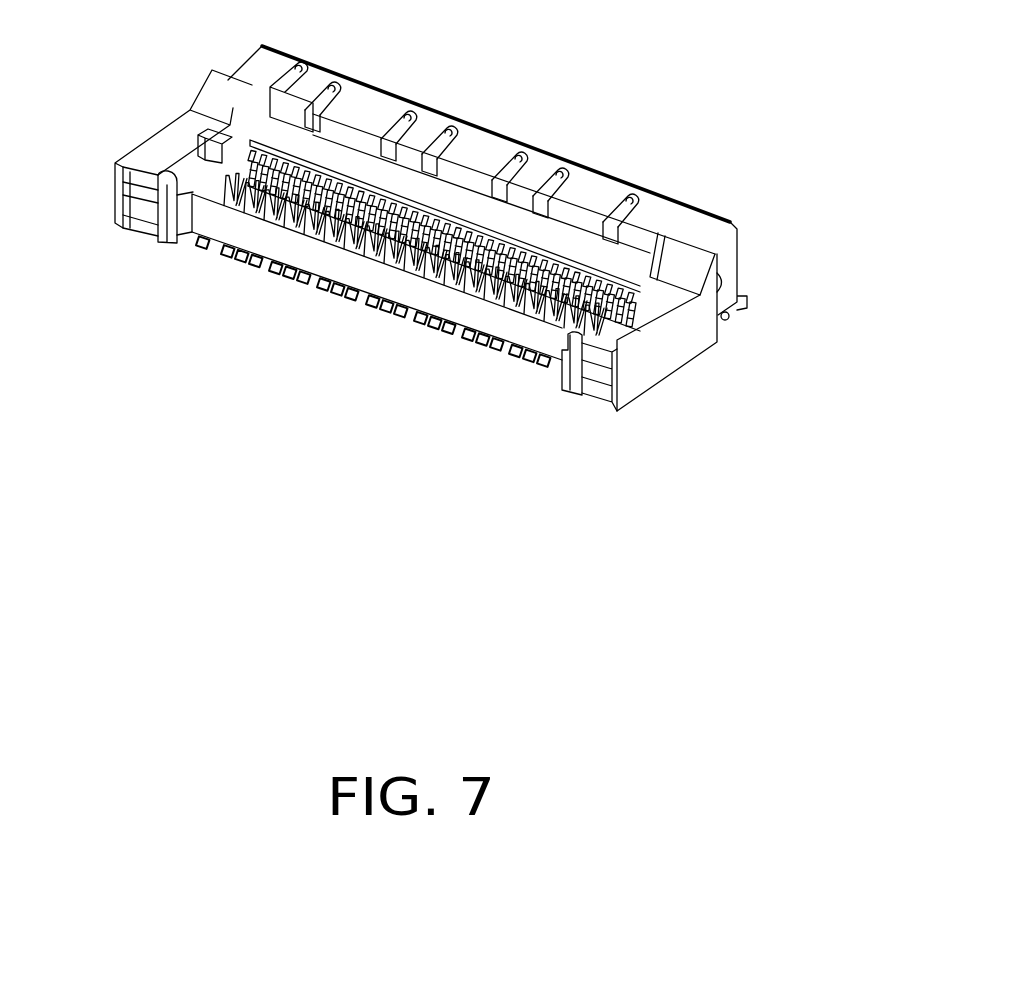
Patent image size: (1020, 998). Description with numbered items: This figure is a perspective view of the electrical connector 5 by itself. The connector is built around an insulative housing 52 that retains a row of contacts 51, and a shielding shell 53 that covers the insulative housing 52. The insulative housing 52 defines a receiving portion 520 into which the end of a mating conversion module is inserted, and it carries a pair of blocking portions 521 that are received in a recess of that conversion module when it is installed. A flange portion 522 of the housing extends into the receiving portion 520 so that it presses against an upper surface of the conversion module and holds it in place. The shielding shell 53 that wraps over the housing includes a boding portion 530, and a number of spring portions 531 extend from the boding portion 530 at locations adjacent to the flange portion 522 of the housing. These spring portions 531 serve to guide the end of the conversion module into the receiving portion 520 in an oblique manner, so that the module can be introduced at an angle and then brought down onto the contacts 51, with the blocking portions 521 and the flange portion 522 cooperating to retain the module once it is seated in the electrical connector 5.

The electrical connector 5 is at (160, 97).
The contacts 51 is at (440, 200).
The insulative housing 52 is at (642, 320).
The receiving portion 520 is at (210, 173).
The blocking portions 521 is at (173, 195).
The flange portion 522 is at (338, 128).
The shielding shell 53 is at (693, 223).
The boding portion 530 is at (590, 187).
The latch tab 531 is at (400, 147).